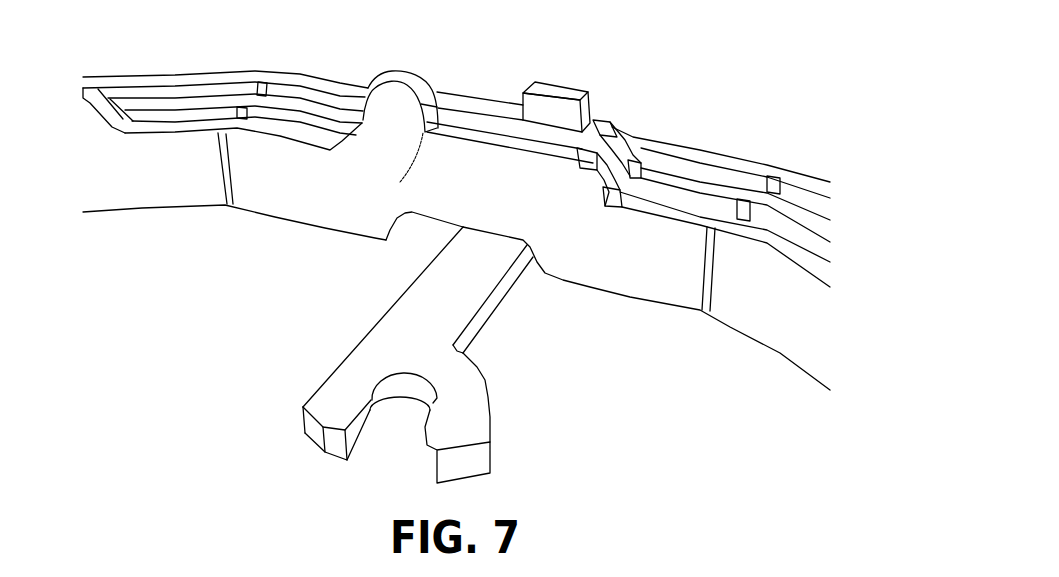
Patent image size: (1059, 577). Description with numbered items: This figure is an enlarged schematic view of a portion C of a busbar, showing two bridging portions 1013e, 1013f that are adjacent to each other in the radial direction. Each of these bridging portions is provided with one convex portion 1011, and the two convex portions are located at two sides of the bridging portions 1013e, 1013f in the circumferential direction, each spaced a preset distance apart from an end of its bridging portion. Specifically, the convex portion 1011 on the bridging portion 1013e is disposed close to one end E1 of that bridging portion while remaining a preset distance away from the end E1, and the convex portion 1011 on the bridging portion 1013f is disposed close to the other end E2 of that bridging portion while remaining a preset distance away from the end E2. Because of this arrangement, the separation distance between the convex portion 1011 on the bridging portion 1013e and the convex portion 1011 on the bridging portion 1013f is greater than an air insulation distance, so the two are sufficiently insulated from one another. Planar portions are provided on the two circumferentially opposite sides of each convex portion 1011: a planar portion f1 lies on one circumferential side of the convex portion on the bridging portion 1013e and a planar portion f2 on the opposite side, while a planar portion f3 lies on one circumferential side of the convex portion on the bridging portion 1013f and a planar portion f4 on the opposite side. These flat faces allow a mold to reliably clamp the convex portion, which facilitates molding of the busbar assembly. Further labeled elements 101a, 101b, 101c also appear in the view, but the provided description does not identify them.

The portion of the busbar C is at (228, 58).
The one end of the bridging portion E1 is at (318, 172).
The other end of the bridging portion E2 is at (623, 127).
The convex portion 1011 is at (417, 75).
The bridging portion 1013f is at (474, 90).
The bridging portion 1013e is at (447, 194).
The planar portion f1 is at (400, 182).
The planar portion f2 is at (362, 150).
The planar portion f3 is at (593, 103).
The planar portion f4 is at (513, 98).
The first section 101a is at (622, 254).
The second section 101b is at (705, 200).
The third section 101c is at (803, 194).